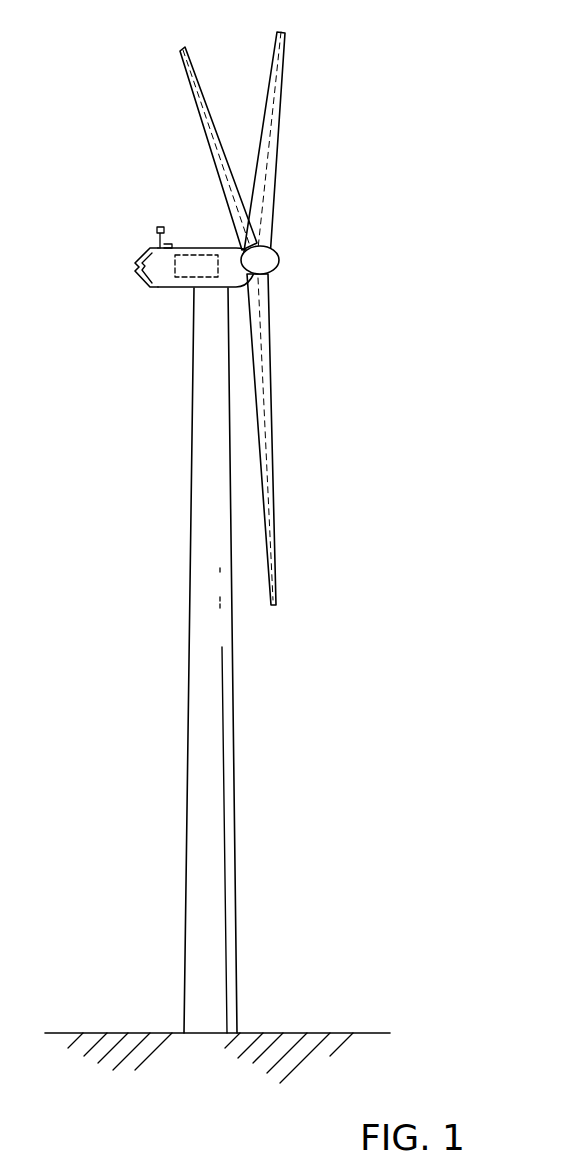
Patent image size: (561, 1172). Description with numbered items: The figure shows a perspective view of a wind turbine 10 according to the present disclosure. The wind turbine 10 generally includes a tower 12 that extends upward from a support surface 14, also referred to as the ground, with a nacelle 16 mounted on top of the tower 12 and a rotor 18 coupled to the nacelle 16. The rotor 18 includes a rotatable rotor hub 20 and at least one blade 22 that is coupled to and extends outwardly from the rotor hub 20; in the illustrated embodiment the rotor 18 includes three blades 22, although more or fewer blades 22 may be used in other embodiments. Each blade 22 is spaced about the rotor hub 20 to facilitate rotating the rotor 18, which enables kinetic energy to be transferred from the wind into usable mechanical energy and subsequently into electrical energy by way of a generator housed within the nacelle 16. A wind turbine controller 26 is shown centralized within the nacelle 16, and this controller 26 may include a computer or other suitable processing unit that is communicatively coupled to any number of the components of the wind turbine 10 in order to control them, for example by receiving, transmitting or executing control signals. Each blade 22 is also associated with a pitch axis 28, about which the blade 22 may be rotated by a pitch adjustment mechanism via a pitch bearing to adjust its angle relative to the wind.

The wind turbine 10 is at (388, 102).
The tower 12 is at (197, 762).
The support surface 14 is at (118, 1033).
The nacelle 16 is at (172, 290).
The rotor 18 is at (261, 308).
The rotor hub 20 is at (277, 267).
The blade 22 is at (272, 68).
The wind turbine controller 26 is at (200, 247).
The pitch axis 28 is at (217, 180).